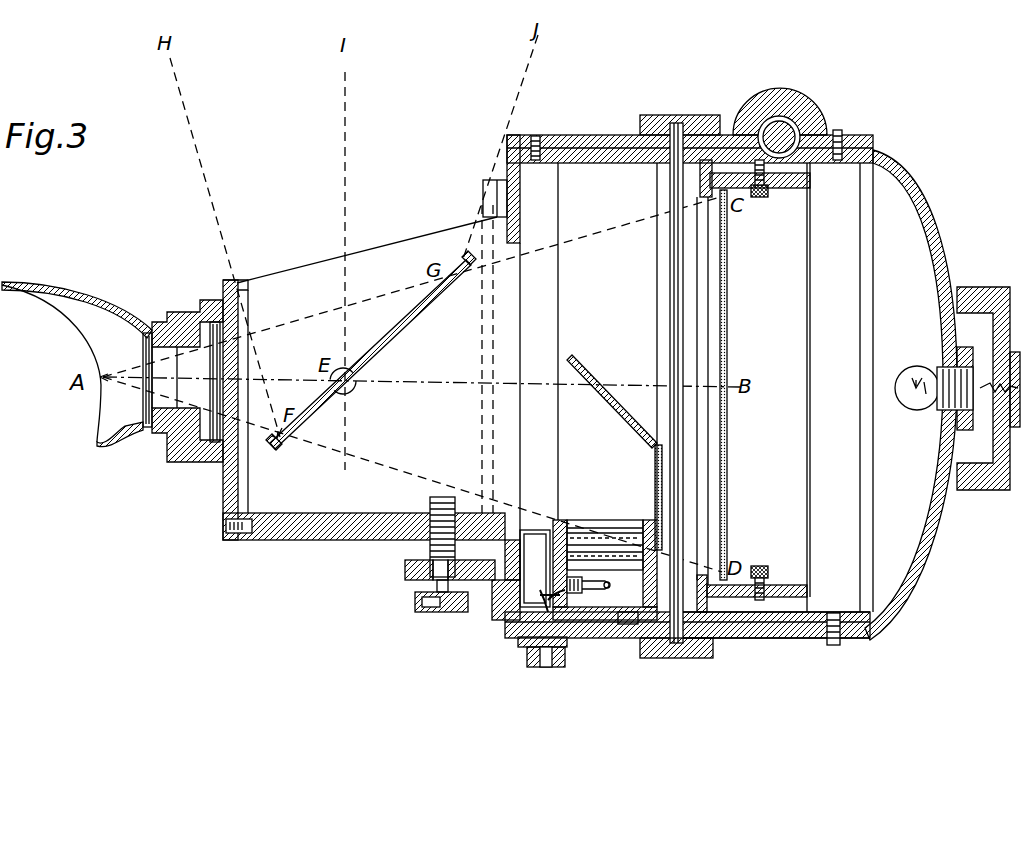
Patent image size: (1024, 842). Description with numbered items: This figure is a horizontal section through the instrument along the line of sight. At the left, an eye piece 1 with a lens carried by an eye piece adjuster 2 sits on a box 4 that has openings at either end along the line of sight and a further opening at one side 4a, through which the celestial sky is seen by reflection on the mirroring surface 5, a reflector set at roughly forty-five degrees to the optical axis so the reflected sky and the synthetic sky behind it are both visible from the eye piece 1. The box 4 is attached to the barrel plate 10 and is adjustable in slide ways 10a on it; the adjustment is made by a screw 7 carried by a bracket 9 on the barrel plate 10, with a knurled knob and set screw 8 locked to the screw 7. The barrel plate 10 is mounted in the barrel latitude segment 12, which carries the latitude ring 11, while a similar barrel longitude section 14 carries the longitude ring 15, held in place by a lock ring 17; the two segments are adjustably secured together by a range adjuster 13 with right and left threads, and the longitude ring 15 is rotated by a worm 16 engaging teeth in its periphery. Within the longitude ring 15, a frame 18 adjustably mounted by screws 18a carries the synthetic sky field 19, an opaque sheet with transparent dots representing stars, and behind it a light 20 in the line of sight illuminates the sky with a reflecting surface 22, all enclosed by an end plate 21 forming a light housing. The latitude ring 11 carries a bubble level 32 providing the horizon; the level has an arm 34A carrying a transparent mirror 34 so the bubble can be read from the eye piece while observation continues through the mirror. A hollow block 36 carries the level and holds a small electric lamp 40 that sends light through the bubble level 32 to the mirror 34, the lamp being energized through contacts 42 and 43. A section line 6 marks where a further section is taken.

The eye piece 1 is at (147, 430).
The eye piece adjuster 2 is at (185, 442).
The box 4 is at (310, 533).
The side opening 4a is at (400, 253).
The mirroring surface 5 is at (390, 335).
The section line 6 is at (560, 135).
The screw 7 is at (427, 548).
The knurled knob and set screw 8 is at (423, 612).
The bracket 9 is at (403, 573).
The barrel plate 10 is at (505, 615).
The slide ways 10a is at (495, 192).
The latitude ring 11 is at (613, 642).
The barrel latitude segment 12 is at (593, 637).
The range adjuster 13 is at (702, 657).
The barrel longitude section 14 is at (733, 635).
The longitude ring 15 is at (793, 633).
The worm 16 is at (800, 92).
The lock ring 17 is at (840, 645).
The frame 18 is at (808, 588).
The screws 18a is at (760, 210).
The synthetic sky field 19 is at (727, 493).
The light 20 is at (913, 408).
The plate 21 is at (905, 578).
The reflecting surface 22 is at (925, 510).
The bubble level 32 is at (620, 518).
The transparent mirror 34 is at (615, 402).
The arm 34A is at (657, 473).
The hollow block 36 is at (627, 643).
The electric lamp 40 is at (635, 607).
The contact 42 is at (540, 590).
The contact 43 is at (525, 530).